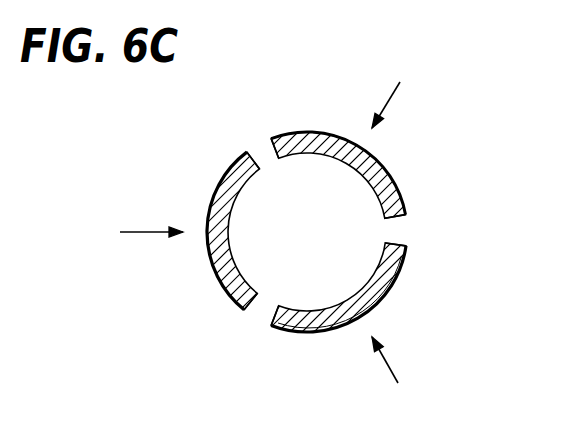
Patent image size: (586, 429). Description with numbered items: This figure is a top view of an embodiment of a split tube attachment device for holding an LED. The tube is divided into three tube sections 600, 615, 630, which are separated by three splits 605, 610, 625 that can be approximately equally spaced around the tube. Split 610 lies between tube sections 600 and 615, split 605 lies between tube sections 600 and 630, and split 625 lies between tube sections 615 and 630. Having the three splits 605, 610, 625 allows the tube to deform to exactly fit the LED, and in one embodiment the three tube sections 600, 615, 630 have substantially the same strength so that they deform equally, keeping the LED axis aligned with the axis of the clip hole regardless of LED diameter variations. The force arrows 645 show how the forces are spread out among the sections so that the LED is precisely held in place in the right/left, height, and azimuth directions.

The tube section 600 is at (373, 158).
The split 605 is at (395, 233).
The split 610 is at (262, 150).
The tube section 615 is at (216, 272).
The split 625 is at (263, 310).
The tube section 630 is at (392, 290).
The force arrows 645 is at (391, 97).